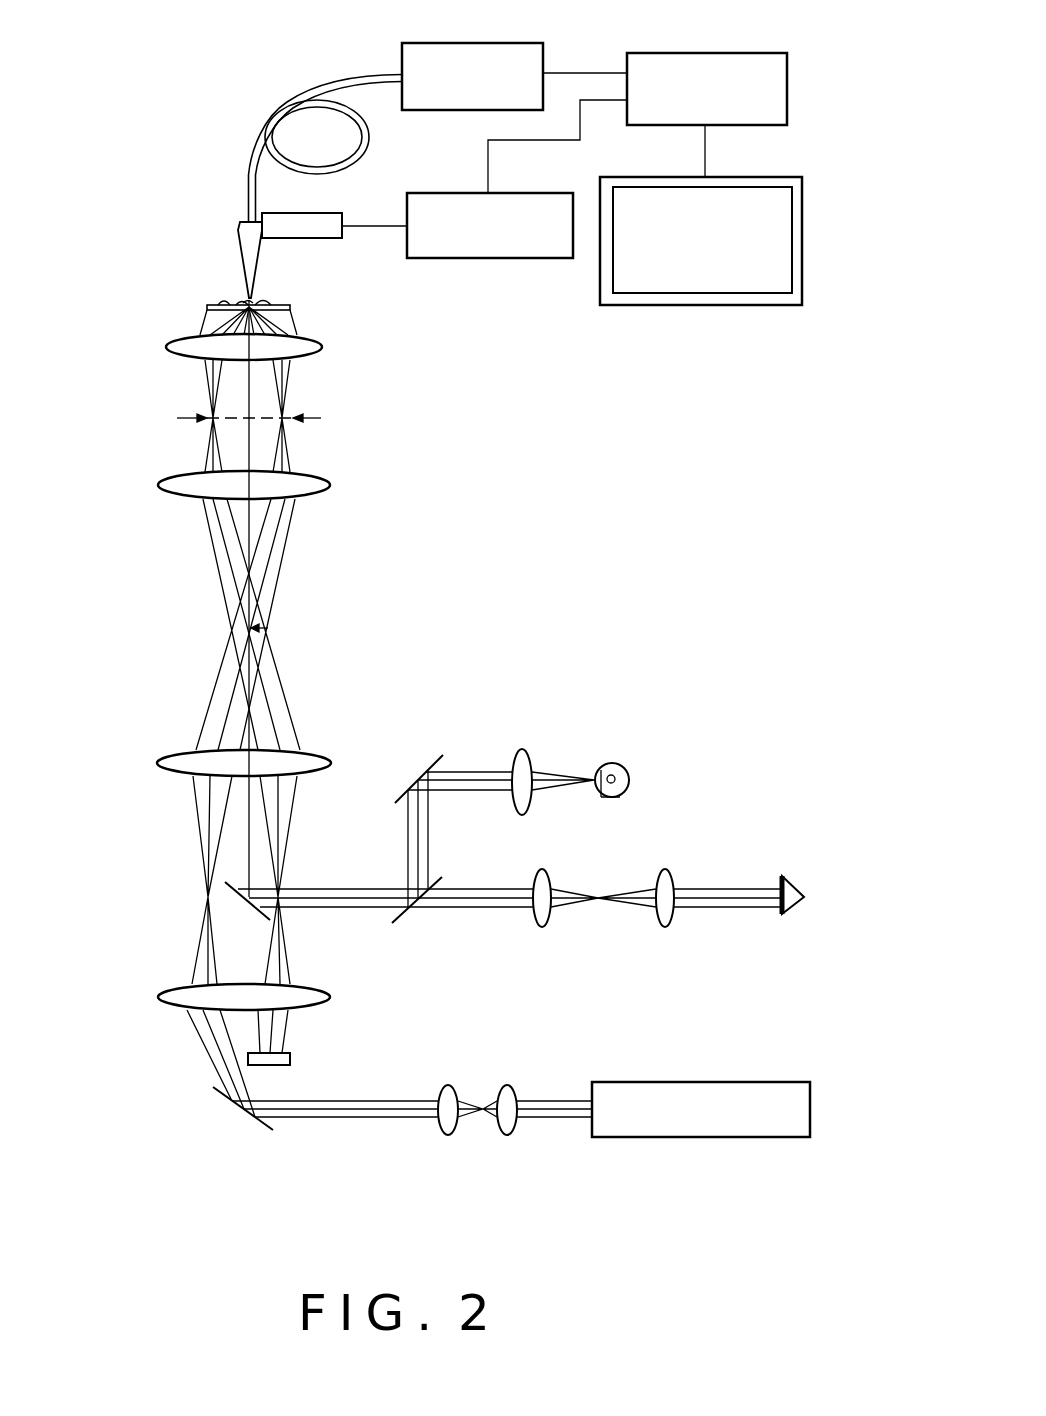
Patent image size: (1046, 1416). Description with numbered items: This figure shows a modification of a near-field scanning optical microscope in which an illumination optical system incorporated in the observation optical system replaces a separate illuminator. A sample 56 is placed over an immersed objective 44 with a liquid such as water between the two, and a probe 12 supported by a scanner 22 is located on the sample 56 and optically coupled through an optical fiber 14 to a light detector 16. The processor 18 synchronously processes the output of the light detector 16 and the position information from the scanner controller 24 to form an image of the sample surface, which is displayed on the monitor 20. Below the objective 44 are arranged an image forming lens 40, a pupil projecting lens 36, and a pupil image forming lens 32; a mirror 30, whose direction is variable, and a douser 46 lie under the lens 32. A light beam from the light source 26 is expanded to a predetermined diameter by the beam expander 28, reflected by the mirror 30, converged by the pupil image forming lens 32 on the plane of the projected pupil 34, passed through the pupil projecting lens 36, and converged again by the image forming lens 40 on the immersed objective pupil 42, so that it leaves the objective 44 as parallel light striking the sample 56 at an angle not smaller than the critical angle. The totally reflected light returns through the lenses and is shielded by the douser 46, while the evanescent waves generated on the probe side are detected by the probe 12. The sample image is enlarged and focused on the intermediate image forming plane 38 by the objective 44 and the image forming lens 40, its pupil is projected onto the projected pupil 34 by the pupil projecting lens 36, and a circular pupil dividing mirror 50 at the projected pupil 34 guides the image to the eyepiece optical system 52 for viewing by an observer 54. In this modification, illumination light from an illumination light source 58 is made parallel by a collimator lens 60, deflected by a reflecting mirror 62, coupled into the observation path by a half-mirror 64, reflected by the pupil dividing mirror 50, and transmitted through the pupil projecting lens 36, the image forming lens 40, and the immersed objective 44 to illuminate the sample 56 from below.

The probe 12 is at (259, 268).
The optical fiber 14 is at (312, 81).
The light detector 16 is at (456, 43).
The processor 18 is at (705, 53).
The monitor 20 is at (803, 238).
The scanner 22 is at (330, 214).
The scanner controller 24 is at (490, 261).
The light source 26 is at (703, 1138).
The beam expander 28 is at (523, 1147).
The mirror 30 is at (251, 1123).
The pupil image forming lens 32 is at (161, 1004).
The projected pupil 34 is at (190, 899).
The pupil projecting lens 36 is at (157, 765).
The intermediate image forming plane 38 is at (218, 627).
The image forming lens 40 is at (157, 487).
The immersed objective pupil 42 is at (175, 418).
The immersed objective 44 is at (161, 310).
The douser 46 is at (298, 1062).
The pupil dividing mirror 50 is at (260, 913).
The eyepiece optical system 52 is at (678, 932).
The observer 54 is at (788, 916).
The sample 56 is at (235, 302).
The illumination light source 58 is at (613, 762).
The collimator lens 60 is at (522, 748).
The reflecting mirror 62 is at (427, 764).
The half-mirror 64 is at (413, 917).